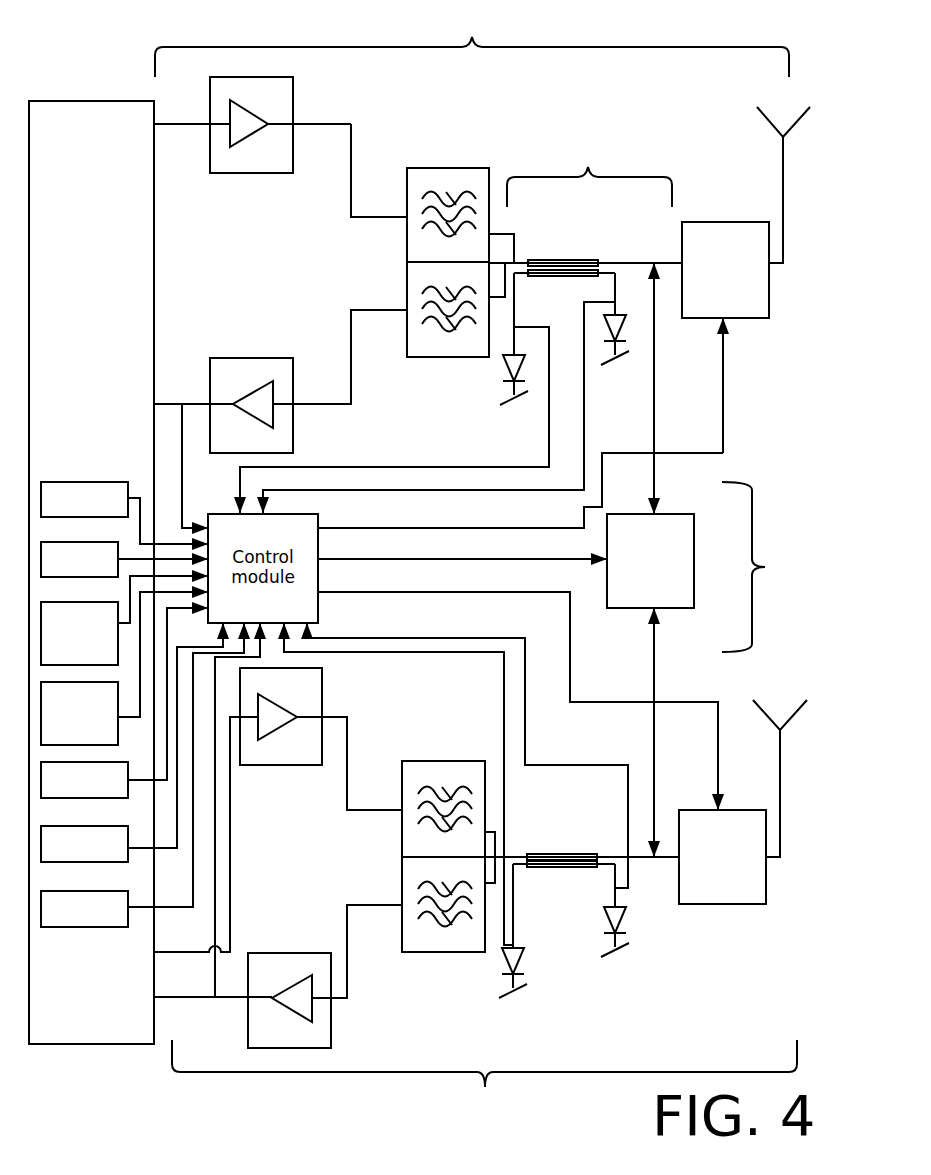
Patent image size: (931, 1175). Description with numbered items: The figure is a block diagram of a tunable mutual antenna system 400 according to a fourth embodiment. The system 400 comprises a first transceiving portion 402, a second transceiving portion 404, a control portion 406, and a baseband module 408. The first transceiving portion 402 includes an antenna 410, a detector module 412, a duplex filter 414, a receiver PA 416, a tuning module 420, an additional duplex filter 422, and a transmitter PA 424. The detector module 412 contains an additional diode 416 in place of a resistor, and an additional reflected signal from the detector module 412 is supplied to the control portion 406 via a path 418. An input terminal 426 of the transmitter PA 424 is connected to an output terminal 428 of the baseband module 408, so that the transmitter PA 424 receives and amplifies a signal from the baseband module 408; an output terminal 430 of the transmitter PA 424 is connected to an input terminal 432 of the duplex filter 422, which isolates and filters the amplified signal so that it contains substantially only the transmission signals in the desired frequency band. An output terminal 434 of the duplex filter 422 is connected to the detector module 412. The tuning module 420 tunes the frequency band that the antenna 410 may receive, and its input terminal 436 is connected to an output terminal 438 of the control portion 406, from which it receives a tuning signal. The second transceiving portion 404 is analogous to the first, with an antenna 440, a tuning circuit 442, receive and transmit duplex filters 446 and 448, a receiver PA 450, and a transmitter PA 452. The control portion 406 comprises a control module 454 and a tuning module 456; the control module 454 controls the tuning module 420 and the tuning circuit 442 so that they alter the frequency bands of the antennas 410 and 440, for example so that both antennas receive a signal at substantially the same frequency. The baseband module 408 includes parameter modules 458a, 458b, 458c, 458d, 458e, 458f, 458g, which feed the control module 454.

The tunable mutual antenna system 400 is at (152, 48).
The transceiving portion 402 is at (472, 41).
The transceiving portion 404 is at (484, 1083).
The control portion 406 is at (765, 567).
The baseband module 408 is at (91, 572).
The antenna 410 is at (785, 200).
The detector module 412 is at (585, 208).
The duplex filter 414 is at (437, 359).
The receiver PA 416 is at (253, 358).
The path 418 is at (455, 492).
The tuning module 420 is at (698, 222).
The duplex filter 422 is at (434, 168).
The transmitter PA 424 is at (300, 82).
The input terminal 426 is at (209, 120).
The output terminal 428 is at (155, 128).
The output terminal 430 is at (294, 123).
The input terminal 432 is at (403, 219).
The output terminal 434 is at (490, 233).
The input terminal 436 is at (730, 319).
The output terminal 438 is at (318, 530).
The antenna 440 is at (782, 768).
The tuning circuit 442 is at (768, 884).
The duplex filter 446 is at (432, 953).
The duplex filter 448 is at (427, 761).
The receiver PA 450 is at (282, 953).
The transmitter PA 452 is at (306, 766).
The control module 454 is at (322, 619).
The tuning module 456 is at (682, 514).
The parameter module 458a is at (124, 513).
The parameter module 458b is at (124, 559).
The parameter module 458c is at (124, 620).
The parameter module 458d is at (124, 668).
The parameter module 458e is at (124, 703).
The parameter module 458f is at (132, 742).
The parameter module 458g is at (142, 775).